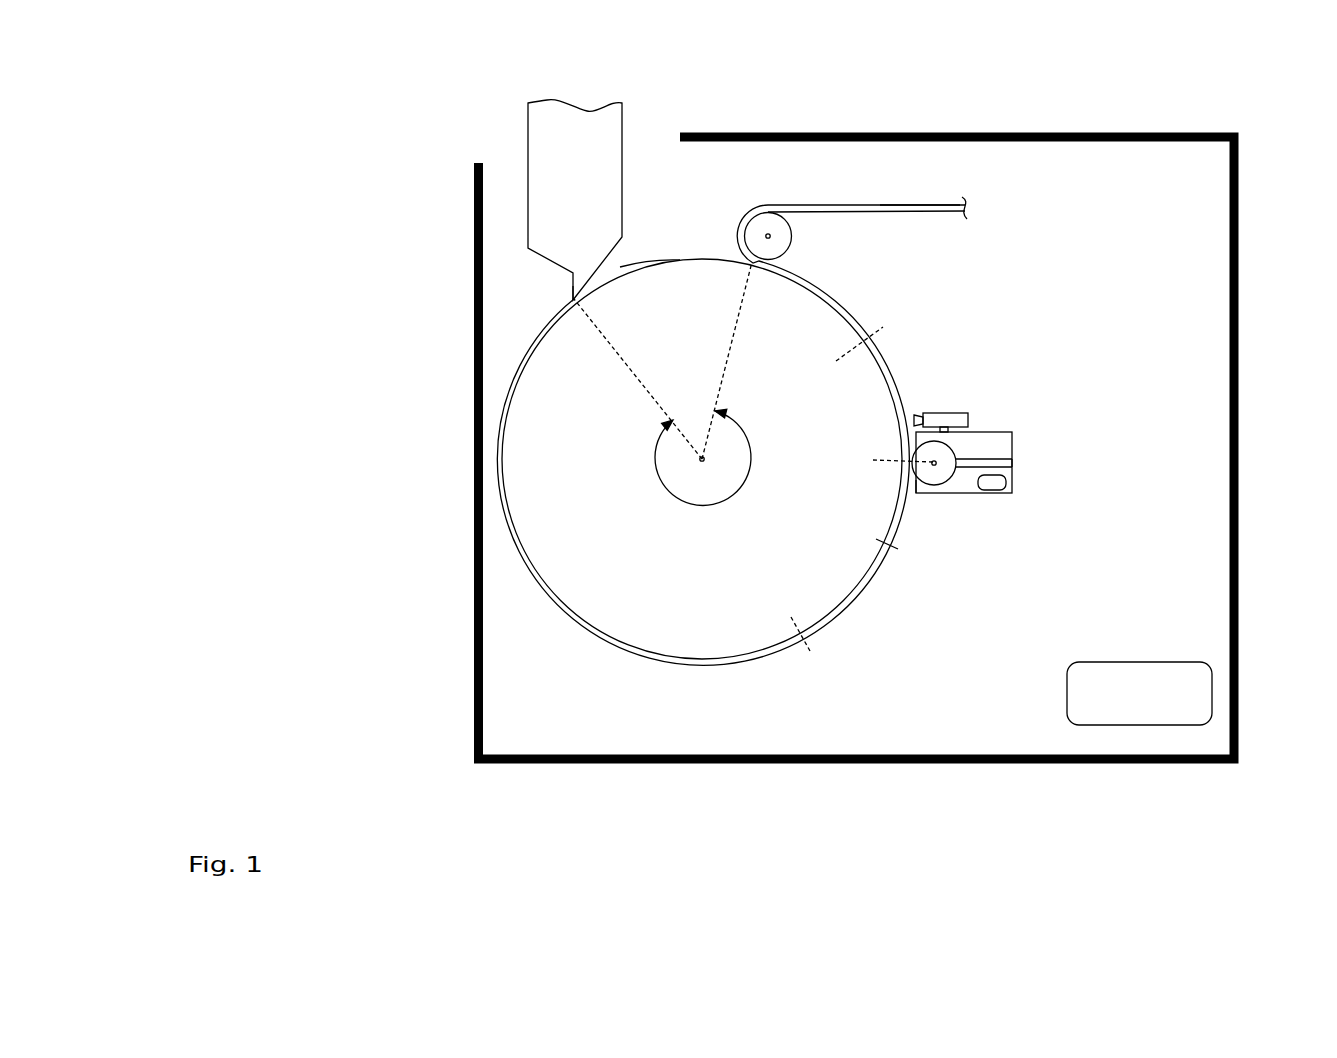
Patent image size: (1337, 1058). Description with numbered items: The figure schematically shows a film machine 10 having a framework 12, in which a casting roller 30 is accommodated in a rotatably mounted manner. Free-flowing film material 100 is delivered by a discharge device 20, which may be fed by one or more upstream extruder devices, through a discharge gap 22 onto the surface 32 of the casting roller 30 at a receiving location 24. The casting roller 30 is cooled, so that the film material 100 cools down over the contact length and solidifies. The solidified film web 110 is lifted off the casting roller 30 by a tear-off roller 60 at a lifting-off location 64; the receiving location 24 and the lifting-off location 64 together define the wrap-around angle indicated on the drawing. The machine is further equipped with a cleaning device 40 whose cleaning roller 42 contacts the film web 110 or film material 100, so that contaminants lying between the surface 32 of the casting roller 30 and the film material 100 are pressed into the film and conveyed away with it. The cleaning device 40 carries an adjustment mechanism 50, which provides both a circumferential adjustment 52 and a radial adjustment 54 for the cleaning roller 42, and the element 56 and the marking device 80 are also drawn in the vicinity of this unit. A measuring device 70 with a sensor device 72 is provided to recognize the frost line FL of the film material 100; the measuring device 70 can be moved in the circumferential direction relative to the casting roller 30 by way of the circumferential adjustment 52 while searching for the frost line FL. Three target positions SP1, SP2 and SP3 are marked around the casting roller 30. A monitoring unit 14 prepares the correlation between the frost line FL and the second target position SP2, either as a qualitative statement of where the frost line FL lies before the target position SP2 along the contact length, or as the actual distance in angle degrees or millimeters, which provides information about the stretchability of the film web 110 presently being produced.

The film machine 10 is at (290, 188).
The framework 12 is at (1238, 175).
The monitoring unit 14 is at (1139, 693).
The discharge device 20 is at (540, 162).
The discharge gap 22 is at (573, 300).
The receiving location 24 is at (578, 302).
The casting roller 30 is at (647, 672).
The surface 32 is at (648, 262).
The cleaning device 40 is at (1002, 438).
The cleaning roller 42 is at (934, 485).
The adjustment mechanism 50 is at (1041, 467).
The circumferential adjustment 52 is at (985, 432).
The radial adjustment 54 is at (1003, 467).
The drive unit 56 is at (992, 490).
The tear-off roller 60 is at (791, 237).
The lifting-off location 64 is at (750, 263).
The measuring device 70 is at (950, 361).
The sensor device 72 is at (943, 413).
The marking device 80 is at (924, 506).
The film material 100 is at (707, 667).
The film web 110 is at (880, 205).
The target position SP1 is at (842, 356).
The second target position SP2 is at (881, 460).
The target position SP3 is at (786, 622).
The frost line FL is at (874, 532).